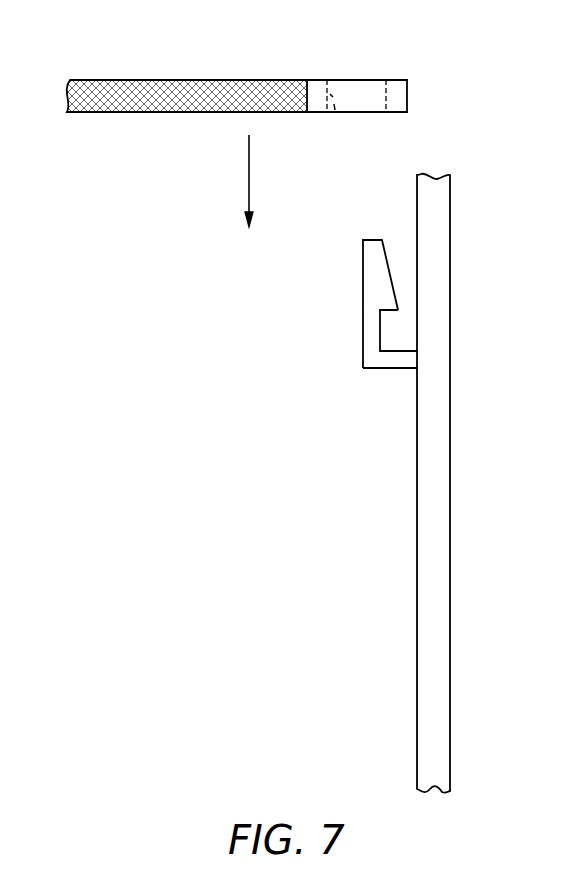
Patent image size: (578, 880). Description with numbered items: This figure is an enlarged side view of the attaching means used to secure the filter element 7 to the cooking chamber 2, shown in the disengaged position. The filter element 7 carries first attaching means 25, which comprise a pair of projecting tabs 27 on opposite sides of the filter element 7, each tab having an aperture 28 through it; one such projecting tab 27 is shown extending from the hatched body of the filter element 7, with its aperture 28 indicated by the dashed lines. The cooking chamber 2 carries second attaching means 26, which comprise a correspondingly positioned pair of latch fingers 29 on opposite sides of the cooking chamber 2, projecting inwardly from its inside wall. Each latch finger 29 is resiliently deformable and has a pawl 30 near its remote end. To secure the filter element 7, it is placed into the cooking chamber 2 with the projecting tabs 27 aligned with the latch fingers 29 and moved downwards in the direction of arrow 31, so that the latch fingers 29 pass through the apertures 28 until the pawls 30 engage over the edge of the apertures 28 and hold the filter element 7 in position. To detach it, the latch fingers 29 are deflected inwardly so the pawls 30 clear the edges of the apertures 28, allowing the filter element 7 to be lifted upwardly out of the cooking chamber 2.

The cooking chamber 2 is at (450, 588).
The filter element 7 is at (157, 80).
The first attaching means 25 is at (267, 87).
The second attaching means 26 is at (362, 341).
The projecting tab 27 is at (407, 93).
The aperture 28 is at (327, 112).
The latch finger 29 is at (364, 339).
The pawl 30 is at (364, 272).
The arrow 31 is at (249, 178).